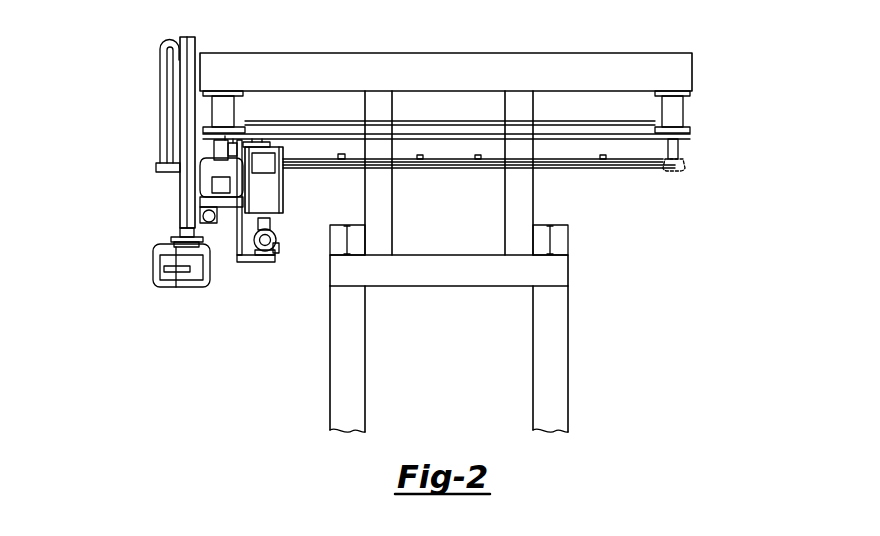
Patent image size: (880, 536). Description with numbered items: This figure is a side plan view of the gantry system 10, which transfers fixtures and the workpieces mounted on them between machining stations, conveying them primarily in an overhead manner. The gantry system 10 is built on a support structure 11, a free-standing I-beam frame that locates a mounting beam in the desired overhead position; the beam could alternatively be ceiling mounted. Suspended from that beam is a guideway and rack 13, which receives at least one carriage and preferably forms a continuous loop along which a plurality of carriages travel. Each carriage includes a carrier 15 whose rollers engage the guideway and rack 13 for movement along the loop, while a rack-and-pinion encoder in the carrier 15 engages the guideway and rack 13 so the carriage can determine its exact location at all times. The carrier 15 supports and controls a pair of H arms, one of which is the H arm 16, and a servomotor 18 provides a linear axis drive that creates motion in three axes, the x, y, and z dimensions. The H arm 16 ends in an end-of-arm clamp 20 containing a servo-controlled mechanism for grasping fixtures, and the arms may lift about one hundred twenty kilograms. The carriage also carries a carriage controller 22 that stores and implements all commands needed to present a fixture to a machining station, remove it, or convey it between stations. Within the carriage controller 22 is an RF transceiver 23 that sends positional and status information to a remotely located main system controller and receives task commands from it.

The gantry system 10 is at (110, 262).
The support structure 11 is at (576, 351).
The guideway and rack 13 is at (686, 165).
The carrier 15 is at (203, 182).
The H arm 16 is at (177, 200).
The servomotor 18 is at (280, 234).
The end-of-arm clamp 20 is at (172, 289).
The carriage controller 22 is at (284, 187).
The RF transceiver 23 is at (256, 152).